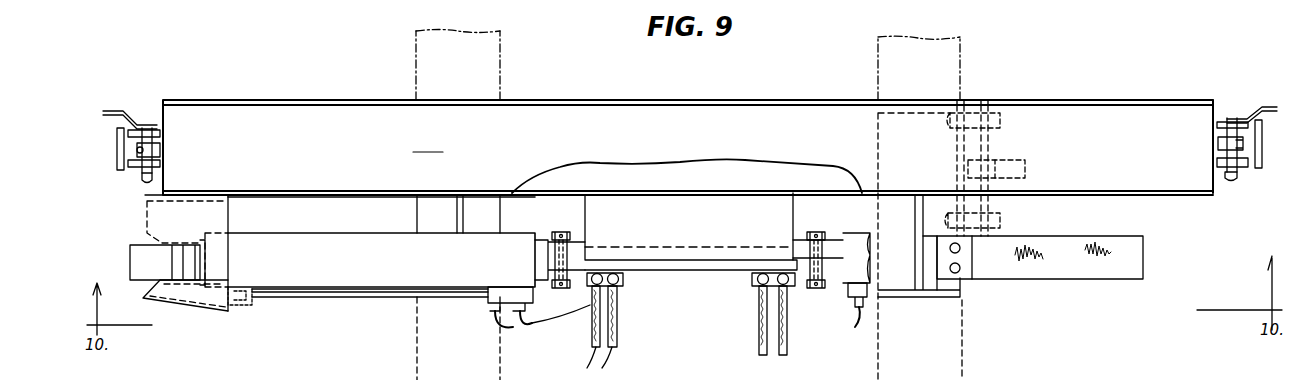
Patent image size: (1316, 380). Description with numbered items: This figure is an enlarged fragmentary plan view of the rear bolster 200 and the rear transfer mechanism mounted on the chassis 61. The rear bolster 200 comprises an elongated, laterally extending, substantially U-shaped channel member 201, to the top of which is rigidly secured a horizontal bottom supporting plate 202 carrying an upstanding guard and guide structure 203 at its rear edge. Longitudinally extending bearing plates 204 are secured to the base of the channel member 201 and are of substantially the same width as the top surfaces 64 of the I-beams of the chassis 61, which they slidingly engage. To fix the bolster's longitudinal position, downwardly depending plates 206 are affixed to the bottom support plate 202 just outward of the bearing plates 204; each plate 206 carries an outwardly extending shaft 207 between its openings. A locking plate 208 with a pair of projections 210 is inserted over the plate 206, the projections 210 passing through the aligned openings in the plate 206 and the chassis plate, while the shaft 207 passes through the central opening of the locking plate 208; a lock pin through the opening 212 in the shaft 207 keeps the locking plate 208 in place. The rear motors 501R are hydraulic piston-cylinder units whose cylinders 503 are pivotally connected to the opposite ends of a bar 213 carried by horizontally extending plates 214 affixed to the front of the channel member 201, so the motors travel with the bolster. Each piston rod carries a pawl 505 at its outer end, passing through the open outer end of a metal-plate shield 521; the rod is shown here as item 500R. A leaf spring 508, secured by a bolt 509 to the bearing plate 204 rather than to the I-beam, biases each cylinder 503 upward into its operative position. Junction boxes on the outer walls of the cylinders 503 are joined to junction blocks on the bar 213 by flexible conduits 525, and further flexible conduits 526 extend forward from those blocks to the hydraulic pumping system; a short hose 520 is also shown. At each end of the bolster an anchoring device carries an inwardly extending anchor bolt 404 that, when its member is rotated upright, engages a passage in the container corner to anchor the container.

The chassis 61 is at (412, 54).
The top surfaces of the I-beams 64 is at (956, 376).
The rear bolster 200 is at (292, 96).
The channel member 201 is at (539, 191).
The bottom supporting plate 202 is at (428, 143).
The guard and guide structure 203 is at (1110, 99).
The bearing plates 204 is at (430, 216).
The downwardly depending plates 206 is at (975, 97).
The outwardly extending shaft 207 is at (1026, 169).
The locking plate 208 is at (998, 204).
The projections 210 is at (1000, 118).
The opening in shaft 212 is at (1000, 173).
The bar 213 is at (715, 268).
The horizontally extending plates 214 is at (724, 196).
The anchor bolt 404 is at (128, 147).
The rod 500R is at (305, 315).
The rear motors 501R is at (382, 284).
The cylinder 503 is at (291, 236).
The pawl 505 is at (140, 258).
The leaf spring 508 is at (1130, 274).
The bolt 509 is at (958, 275).
The hose 520 is at (857, 328).
The shield 521 is at (170, 306).
The flexible conduits 525 is at (513, 328).
The flexible conduits 526 is at (597, 363).